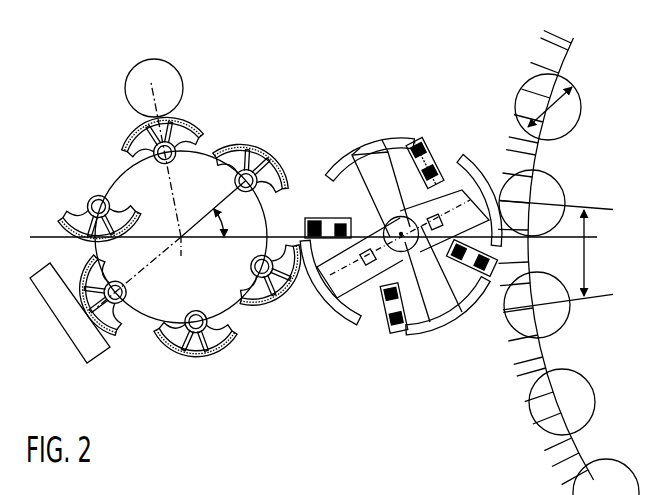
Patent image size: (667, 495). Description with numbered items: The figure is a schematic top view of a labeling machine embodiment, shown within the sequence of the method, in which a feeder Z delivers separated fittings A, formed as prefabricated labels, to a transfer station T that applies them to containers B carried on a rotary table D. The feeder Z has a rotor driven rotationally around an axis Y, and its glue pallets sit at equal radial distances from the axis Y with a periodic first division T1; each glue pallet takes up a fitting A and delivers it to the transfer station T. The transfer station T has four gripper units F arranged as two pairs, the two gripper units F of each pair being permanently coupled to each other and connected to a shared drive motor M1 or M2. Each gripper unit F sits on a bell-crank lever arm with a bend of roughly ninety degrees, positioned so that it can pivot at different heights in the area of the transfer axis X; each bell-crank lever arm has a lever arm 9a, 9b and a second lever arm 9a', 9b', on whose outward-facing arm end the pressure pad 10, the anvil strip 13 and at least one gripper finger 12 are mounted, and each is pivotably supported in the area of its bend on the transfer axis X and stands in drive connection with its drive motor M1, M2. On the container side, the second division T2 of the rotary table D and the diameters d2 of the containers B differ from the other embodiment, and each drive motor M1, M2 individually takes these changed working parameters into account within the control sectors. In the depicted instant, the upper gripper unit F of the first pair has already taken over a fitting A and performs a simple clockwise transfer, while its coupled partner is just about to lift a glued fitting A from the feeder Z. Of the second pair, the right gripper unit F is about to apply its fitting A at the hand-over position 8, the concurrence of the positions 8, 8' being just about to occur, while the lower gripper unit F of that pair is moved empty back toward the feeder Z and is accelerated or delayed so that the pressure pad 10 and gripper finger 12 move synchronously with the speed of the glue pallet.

The feeder Z is at (213, 133).
The axis Y is at (183, 258).
The first division T1 is at (225, 222).
The transfer station T is at (368, 105).
The transfer axis X is at (392, 217).
The hand-over position 8 is at (446, 199).
The position 8' is at (398, 249).
The drive motor M1 is at (363, 258).
The drive motor M2 is at (432, 235).
The second lever arm 9a' is at (358, 150).
The pressure pad 10 is at (360, 143).
The fitting A is at (382, 138).
The gripper finger 12 is at (433, 150).
The anvil strip 13 is at (417, 140).
The gripper unit F is at (442, 137).
The lever arm 9b is at (479, 181).
The second lever arm 9b' is at (448, 320).
The lever arm 9a is at (330, 294).
The rotary table D is at (574, 66).
The container B is at (556, 173).
The diameter d2 is at (582, 111).
The second division T2 is at (585, 255).